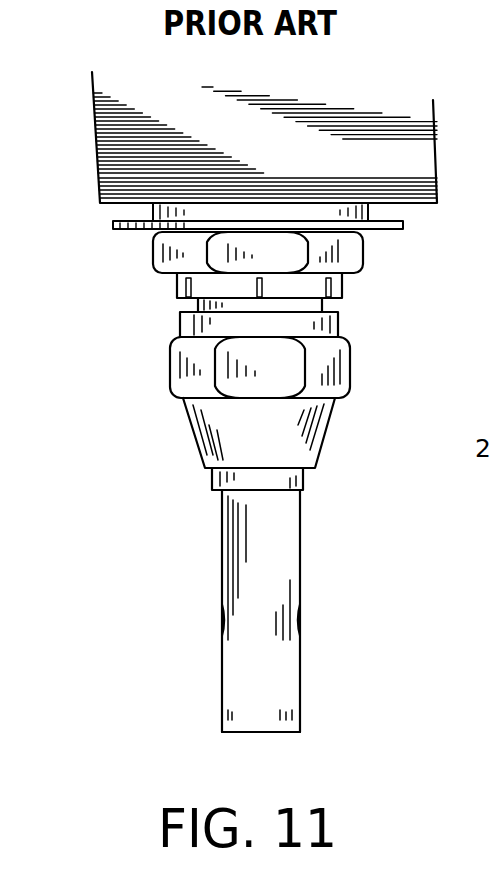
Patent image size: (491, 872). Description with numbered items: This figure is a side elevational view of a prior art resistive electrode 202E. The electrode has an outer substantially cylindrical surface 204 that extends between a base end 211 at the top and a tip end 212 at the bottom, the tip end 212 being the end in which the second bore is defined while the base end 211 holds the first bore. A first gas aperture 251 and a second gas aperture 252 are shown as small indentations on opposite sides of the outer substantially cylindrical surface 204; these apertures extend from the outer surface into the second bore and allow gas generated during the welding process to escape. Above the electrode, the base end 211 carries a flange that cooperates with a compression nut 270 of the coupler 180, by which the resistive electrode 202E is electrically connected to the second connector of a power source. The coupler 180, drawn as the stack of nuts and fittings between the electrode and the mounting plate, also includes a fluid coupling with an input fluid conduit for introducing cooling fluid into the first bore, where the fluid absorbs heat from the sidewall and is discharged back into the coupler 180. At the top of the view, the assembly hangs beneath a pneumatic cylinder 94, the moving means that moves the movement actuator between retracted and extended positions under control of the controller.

The pneumatic cylinder 94 is at (100, 155).
The coupler 180 is at (380, 282).
The compression nut 270 is at (333, 363).
The base end 211 is at (307, 433).
The resistive electrode 202E is at (300, 517).
The outer substantially cylindrical surface 204 is at (300, 578).
The first gas aperture 251 is at (300, 620).
The second gas aperture 252 is at (222, 622).
The tip end 212 is at (280, 732).